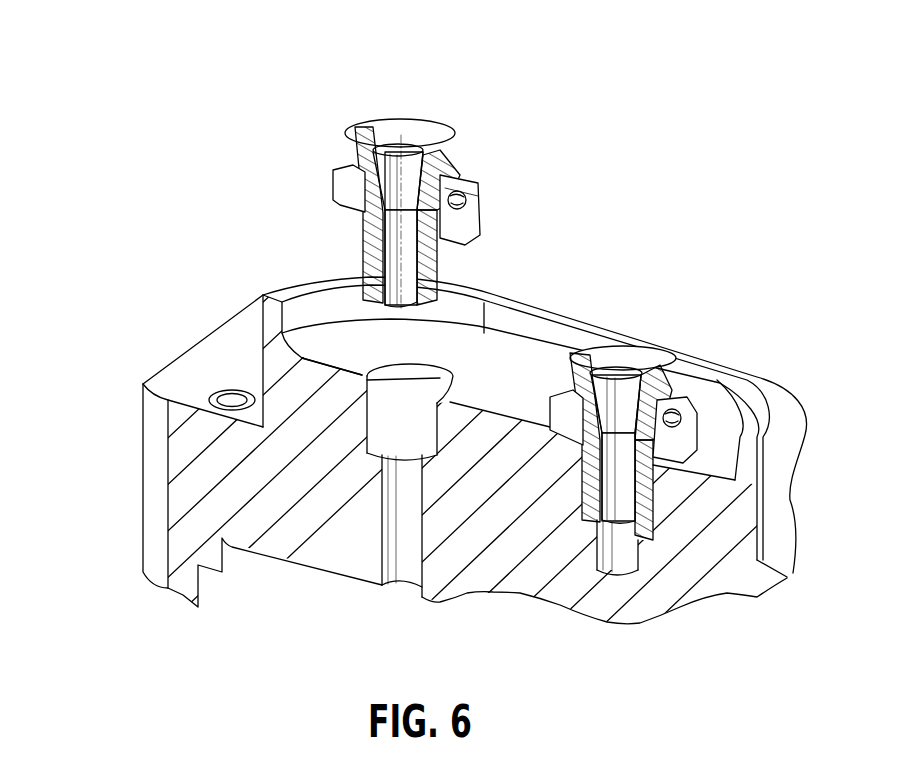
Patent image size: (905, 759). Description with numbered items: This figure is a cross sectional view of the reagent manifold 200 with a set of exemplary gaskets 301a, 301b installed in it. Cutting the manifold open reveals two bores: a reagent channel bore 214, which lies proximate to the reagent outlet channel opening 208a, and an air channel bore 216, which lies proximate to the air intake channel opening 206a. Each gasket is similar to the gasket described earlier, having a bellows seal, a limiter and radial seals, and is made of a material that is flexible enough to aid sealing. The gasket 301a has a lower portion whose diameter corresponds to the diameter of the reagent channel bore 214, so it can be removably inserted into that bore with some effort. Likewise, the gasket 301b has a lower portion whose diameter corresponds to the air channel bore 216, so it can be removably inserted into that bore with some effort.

The reagent manifold 200 is at (126, 444).
The air intake channel opening 206a is at (636, 312).
The reagent outlet channel opening 208a is at (372, 357).
The reagent channel bore 214 is at (438, 370).
The air channel bore 216 is at (653, 530).
The gasket 301a is at (362, 113).
The gasket 301b is at (668, 372).